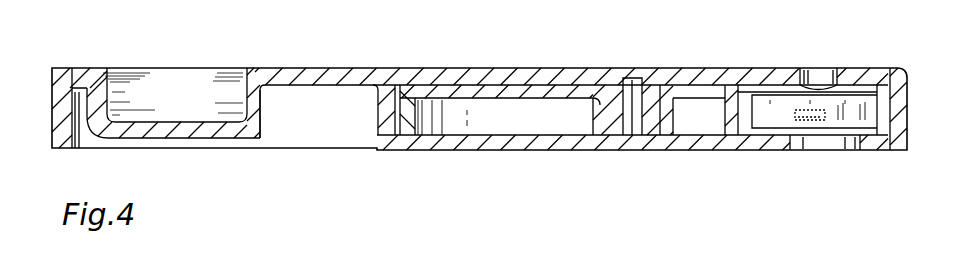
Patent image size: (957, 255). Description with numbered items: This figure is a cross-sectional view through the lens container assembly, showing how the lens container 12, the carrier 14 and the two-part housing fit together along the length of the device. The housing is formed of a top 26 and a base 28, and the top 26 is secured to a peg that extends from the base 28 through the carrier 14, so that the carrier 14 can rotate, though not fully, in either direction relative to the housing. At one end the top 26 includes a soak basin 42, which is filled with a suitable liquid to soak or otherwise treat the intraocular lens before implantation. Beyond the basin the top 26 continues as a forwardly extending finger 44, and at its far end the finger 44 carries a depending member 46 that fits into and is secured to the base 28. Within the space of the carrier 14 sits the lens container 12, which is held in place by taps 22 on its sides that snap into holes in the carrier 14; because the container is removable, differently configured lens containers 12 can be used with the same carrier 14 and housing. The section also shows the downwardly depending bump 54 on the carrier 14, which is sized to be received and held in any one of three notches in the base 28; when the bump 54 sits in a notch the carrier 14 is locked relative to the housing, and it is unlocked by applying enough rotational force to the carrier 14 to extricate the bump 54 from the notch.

The lens container 12 is at (853, 112).
The carrier 14 is at (665, 90).
The taps 22 is at (805, 108).
The top 26 is at (328, 74).
The base 28 is at (617, 137).
The soak basin 42 is at (192, 102).
The finger 44 is at (693, 82).
The depending member 46 is at (897, 108).
The bump 54 is at (878, 140).